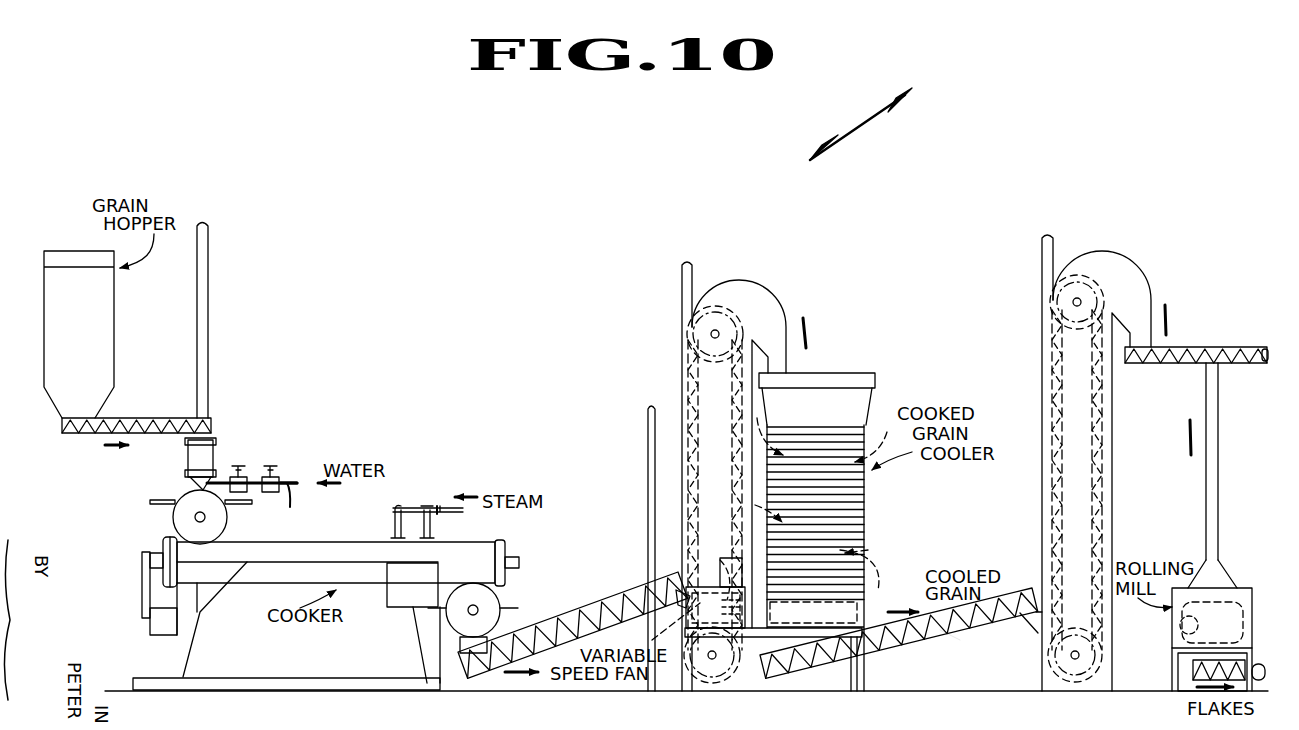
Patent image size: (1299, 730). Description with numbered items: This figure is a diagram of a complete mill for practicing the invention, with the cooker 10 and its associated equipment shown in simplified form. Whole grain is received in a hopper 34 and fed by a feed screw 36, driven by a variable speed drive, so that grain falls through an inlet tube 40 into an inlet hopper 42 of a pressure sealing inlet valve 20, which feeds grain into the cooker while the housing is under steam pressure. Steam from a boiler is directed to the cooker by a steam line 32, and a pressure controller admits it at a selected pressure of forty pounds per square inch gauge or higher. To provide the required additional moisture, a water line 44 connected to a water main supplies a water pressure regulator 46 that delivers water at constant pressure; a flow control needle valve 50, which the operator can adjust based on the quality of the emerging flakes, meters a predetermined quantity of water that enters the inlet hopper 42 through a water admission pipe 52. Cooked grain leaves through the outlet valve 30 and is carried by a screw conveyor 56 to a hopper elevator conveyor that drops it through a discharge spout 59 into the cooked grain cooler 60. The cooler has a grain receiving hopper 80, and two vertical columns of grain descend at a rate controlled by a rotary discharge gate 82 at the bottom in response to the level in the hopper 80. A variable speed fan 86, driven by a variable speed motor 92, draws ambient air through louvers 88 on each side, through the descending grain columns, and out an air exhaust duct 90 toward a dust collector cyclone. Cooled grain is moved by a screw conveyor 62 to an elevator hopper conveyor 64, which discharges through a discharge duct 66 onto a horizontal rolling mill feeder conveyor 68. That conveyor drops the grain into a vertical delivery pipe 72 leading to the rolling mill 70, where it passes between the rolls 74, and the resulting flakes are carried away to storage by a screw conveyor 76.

The cooker 10 is at (250, 582).
The pressure sealing inlet valve 20 is at (172, 521).
The outlet valve 30 is at (452, 630).
The steam line 32 is at (438, 508).
The hopper 34 is at (103, 355).
The feed screw 36 is at (128, 418).
The inlet tube 40 is at (188, 460).
The inlet hopper 42 is at (192, 482).
The water line 44 is at (256, 506).
The water pressure regulator 46 is at (280, 472).
The flow control needle valve 50 is at (247, 472).
The water admission pipe 52 is at (223, 475).
The screw conveyor 56 is at (543, 625).
The discharge spout 59 is at (768, 306).
The cooked grain cooler 60 is at (870, 527).
The screw conveyor 62 is at (952, 640).
The elevator hopper conveyor 64 is at (1042, 340).
The discharge duct 66 is at (1137, 290).
The horizontal rolling mill feeder conveyor 68 is at (1205, 347).
The rolling mill 70 is at (1245, 586).
The vertical delivery pipe 72 is at (1206, 392).
The rolls 74 is at (1183, 640).
The screw conveyor 76 is at (1195, 670).
The grain receiving hopper 80 is at (863, 402).
The rotary discharge gate 82 is at (901, 633).
The variable speed fan 86 is at (722, 560).
The louvers 88 is at (852, 515).
The air exhaust duct 90 is at (757, 613).
The variable speed motor 92 is at (648, 590).